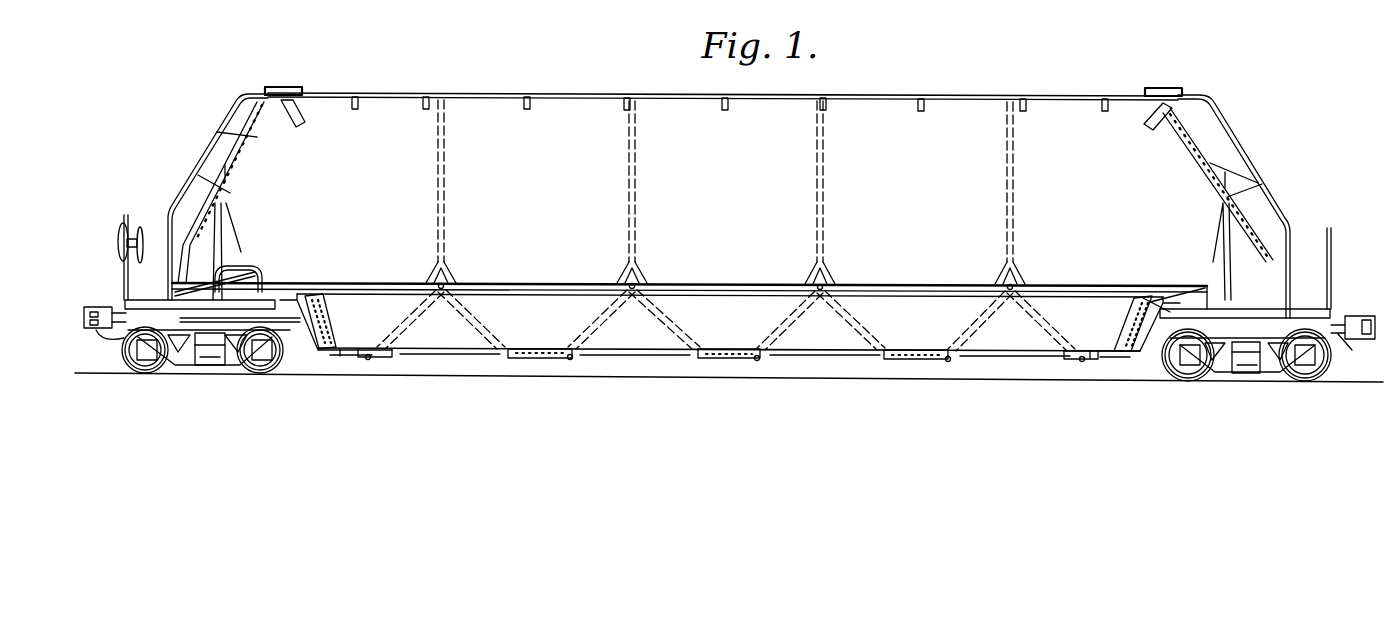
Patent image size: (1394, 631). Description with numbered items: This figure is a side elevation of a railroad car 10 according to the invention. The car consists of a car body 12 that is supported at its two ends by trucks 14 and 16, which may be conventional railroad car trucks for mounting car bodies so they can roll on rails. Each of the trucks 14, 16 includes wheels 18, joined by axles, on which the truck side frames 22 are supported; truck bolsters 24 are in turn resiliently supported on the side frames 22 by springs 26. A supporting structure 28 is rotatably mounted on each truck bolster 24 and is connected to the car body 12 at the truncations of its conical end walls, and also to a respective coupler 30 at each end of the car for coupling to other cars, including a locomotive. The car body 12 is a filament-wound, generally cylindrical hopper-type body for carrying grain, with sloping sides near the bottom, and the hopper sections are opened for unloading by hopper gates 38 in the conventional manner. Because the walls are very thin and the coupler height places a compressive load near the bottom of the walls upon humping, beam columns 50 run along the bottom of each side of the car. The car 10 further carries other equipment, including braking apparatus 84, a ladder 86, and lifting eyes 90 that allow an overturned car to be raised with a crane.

The railroad car 10 is at (183, 125).
The car body 12 is at (408, 110).
The truck 14 is at (210, 386).
The truck 16 is at (1186, 400).
The wheels 18 is at (149, 365).
The truck side frames 22 is at (197, 358).
The truck bolsters 24 is at (198, 346).
The springs 26 is at (217, 361).
The supporting structure 28 is at (250, 324).
The coupler 30 is at (97, 317).
The hopper gates 38 is at (350, 360).
The beam columns 50 is at (550, 328).
The braking apparatus 84 is at (201, 260).
The ladder 86 is at (228, 127).
The lifting eye 90 is at (229, 176).